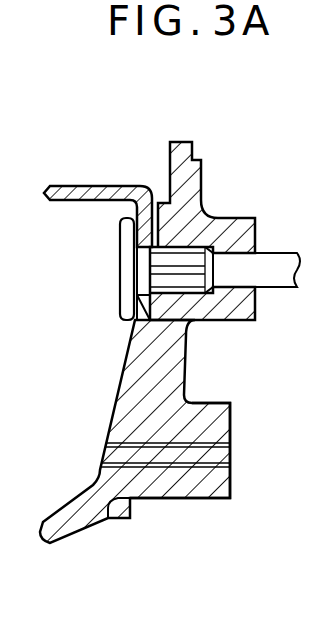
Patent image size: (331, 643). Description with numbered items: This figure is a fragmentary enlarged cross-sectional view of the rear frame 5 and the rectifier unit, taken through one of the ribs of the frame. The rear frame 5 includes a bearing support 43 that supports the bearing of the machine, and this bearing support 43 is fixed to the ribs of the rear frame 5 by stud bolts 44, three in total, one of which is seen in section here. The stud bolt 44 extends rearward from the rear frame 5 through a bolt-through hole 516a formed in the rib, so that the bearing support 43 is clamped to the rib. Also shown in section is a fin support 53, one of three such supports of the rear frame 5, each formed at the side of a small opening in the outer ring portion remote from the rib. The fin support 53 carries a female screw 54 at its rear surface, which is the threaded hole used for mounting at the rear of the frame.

The bolt-through hole 516a is at (242, 255).
The stud bolt 44 is at (285, 272).
The rear frame 5 is at (92, 527).
The fin support 53 is at (231, 480).
The female screw 54 is at (224, 444).
The bearing support 43 is at (84, 200).